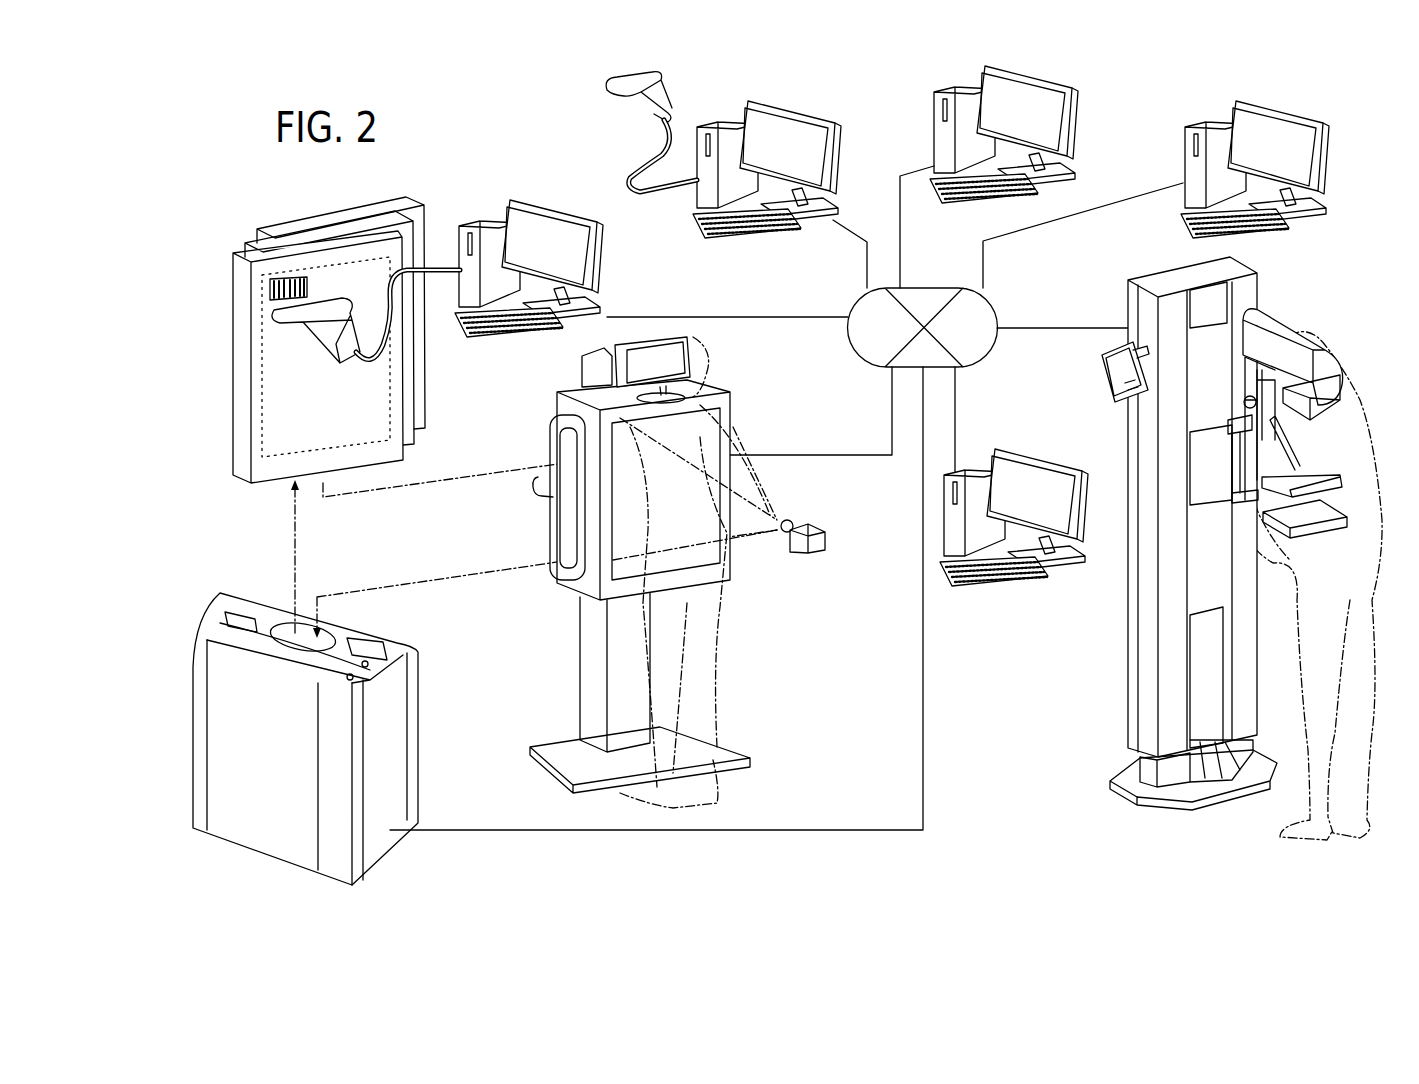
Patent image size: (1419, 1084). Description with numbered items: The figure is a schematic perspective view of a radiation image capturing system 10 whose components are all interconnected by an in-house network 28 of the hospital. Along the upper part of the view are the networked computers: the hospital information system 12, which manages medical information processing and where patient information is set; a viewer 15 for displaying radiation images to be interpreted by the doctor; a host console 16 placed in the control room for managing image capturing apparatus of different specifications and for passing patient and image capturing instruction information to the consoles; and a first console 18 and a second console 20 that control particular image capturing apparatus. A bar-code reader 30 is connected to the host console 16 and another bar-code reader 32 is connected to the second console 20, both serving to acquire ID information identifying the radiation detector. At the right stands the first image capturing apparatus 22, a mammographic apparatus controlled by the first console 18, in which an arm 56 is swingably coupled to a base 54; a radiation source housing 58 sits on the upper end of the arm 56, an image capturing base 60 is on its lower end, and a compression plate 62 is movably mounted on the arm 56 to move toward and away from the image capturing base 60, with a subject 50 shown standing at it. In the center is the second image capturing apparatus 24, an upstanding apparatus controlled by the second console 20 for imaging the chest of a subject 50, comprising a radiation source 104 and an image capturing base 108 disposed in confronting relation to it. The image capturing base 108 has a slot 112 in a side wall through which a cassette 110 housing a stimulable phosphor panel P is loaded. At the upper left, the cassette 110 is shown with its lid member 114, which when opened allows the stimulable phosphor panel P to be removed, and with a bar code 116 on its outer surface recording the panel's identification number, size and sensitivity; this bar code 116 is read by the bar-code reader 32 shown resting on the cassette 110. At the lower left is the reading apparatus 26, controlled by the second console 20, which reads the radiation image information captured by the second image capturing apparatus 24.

The radiation image capturing system 10 is at (486, 122).
The hospital information system (HIS) 12 is at (936, 125).
The viewer 15 is at (1213, 126).
The host console 16 is at (725, 128).
The first console 18 is at (973, 473).
The second console 20 is at (488, 222).
The first image capturing apparatus 22 is at (1245, 533).
The second image capturing apparatus 24 is at (730, 368).
The reading apparatus 26 is at (222, 702).
The in-house network 28 is at (991, 304).
The bar-code reader 30 is at (640, 108).
The bar-code reader 32 is at (303, 318).
The subject 50 is at (705, 657).
The base 54 is at (1145, 634).
The arm 56 is at (1262, 458).
The radiation source housing 58 is at (1312, 345).
The image capturing base 60 is at (1325, 542).
The compression plate 62 is at (1345, 475).
The radiation source 104 is at (813, 551).
The image capturing base 108 is at (558, 579).
The cassette 110 is at (240, 438).
The slot 112 is at (560, 538).
The lid member 114 is at (233, 283).
The bar code 116 is at (307, 288).
The stimulable phosphor panel P is at (370, 400).